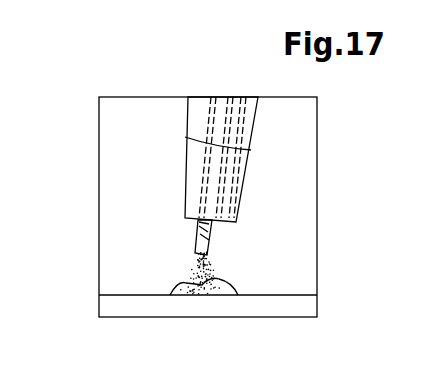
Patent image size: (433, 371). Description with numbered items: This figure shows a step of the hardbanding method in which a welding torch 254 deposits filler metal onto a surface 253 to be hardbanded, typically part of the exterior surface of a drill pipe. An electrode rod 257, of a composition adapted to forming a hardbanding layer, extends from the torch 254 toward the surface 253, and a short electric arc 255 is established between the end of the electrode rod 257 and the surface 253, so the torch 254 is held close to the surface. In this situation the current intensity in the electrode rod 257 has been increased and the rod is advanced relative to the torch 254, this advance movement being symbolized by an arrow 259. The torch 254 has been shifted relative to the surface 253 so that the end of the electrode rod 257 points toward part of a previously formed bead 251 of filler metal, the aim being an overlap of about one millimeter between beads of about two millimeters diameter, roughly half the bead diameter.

The bead of filler metal 251 is at (238, 295).
The surface to be hardbanded 253 is at (285, 295).
The welding torch 254 is at (245, 172).
The electric arc 255 is at (197, 274).
The electrode rod 257 is at (226, 98).
The arrow 259 is at (208, 230).